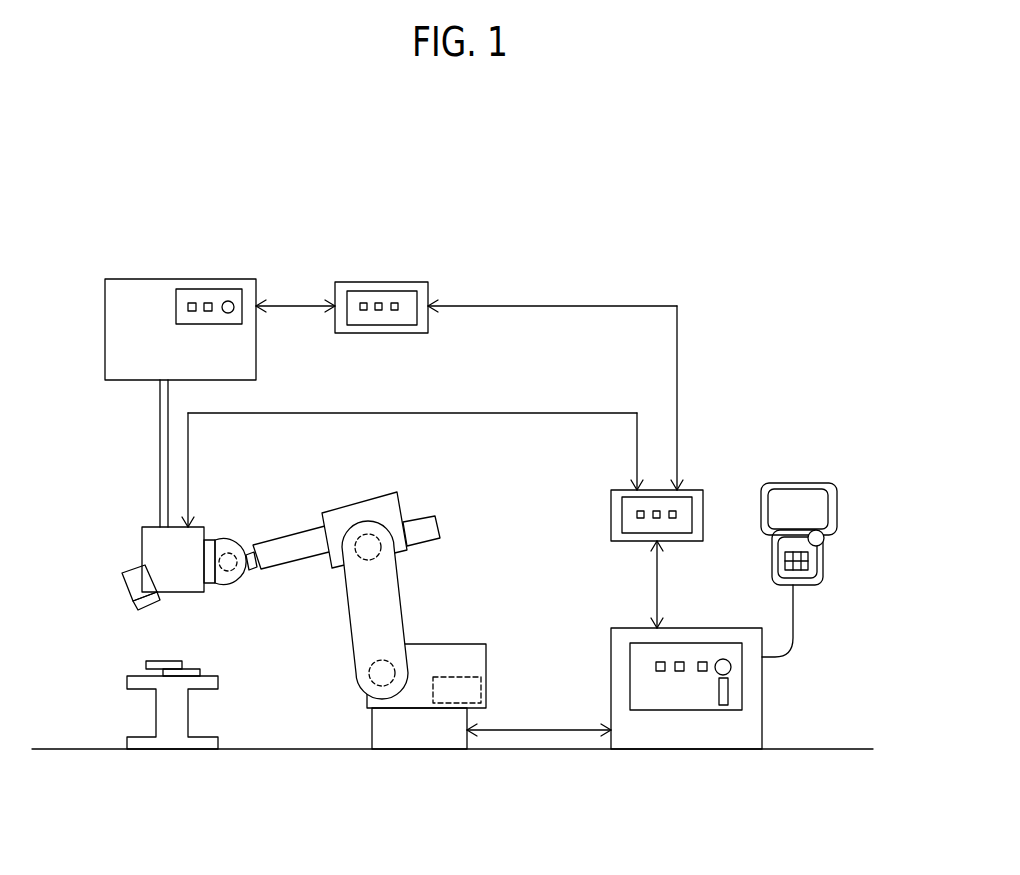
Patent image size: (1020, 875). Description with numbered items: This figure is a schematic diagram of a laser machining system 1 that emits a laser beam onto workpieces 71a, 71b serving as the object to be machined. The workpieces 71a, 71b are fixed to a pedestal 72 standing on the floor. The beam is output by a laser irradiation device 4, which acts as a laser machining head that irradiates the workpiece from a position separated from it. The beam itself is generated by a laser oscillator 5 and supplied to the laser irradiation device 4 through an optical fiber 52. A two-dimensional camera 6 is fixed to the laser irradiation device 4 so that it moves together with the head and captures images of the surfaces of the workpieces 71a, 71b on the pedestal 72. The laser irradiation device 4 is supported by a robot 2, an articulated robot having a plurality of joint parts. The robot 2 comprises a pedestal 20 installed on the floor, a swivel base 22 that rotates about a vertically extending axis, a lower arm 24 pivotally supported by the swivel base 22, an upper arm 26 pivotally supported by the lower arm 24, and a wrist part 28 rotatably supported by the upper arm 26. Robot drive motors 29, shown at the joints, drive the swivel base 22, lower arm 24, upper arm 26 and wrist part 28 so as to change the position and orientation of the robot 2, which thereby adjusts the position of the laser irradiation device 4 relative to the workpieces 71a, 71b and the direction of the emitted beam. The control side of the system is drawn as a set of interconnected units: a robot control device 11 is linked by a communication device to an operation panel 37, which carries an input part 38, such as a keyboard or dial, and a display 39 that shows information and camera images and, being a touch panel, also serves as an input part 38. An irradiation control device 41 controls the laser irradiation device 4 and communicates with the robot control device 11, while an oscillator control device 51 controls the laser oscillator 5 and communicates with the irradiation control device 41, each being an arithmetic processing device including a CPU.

The machining system 1 is at (652, 266).
The robot 2 is at (338, 625).
The laser irradiation device 4 is at (153, 543).
The laser oscillator 5 is at (135, 278).
The camera 6 is at (127, 592).
The robot control device 11 is at (762, 712).
The pedestal 20 is at (370, 727).
The swivel base 22 is at (468, 657).
The lower arm 24 is at (387, 603).
The upper arm 26 is at (279, 550).
The wrist part 28 is at (225, 540).
The robot drive motors 29 is at (423, 518).
The operation panel 37 is at (815, 464).
The input part 38 is at (808, 558).
The display 39 is at (813, 503).
The irradiation control device 41 is at (697, 490).
The oscillator control device 51 is at (392, 281).
The optical fiber 52 is at (160, 453).
The workpiece 71a is at (193, 668).
The workpiece 71b is at (145, 663).
The pedestal 72 is at (167, 715).